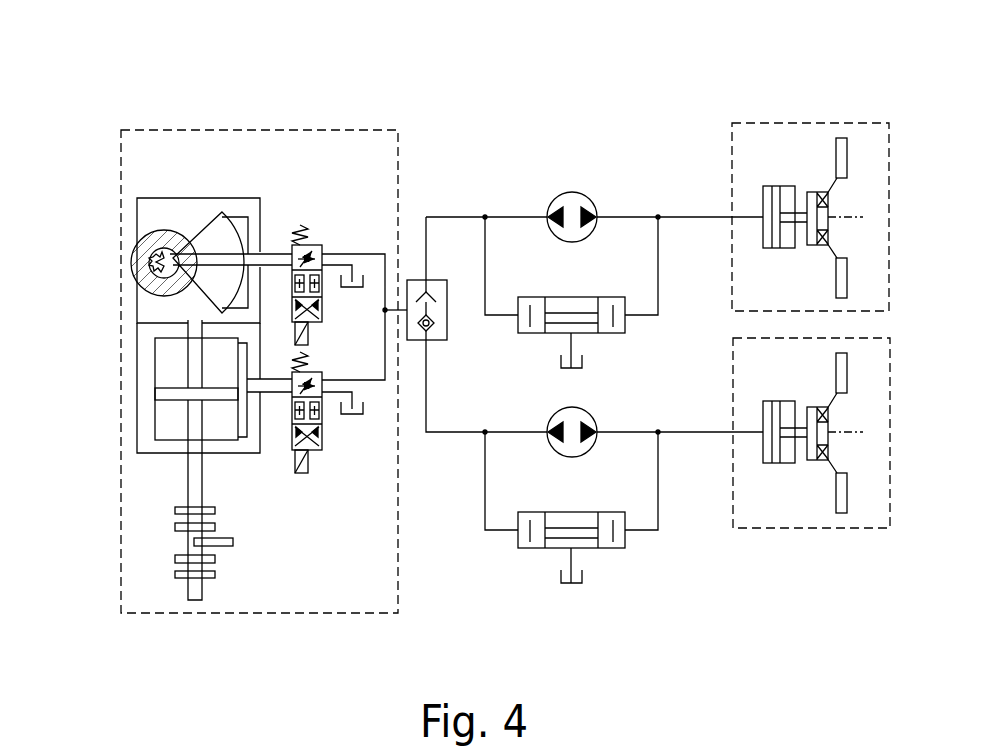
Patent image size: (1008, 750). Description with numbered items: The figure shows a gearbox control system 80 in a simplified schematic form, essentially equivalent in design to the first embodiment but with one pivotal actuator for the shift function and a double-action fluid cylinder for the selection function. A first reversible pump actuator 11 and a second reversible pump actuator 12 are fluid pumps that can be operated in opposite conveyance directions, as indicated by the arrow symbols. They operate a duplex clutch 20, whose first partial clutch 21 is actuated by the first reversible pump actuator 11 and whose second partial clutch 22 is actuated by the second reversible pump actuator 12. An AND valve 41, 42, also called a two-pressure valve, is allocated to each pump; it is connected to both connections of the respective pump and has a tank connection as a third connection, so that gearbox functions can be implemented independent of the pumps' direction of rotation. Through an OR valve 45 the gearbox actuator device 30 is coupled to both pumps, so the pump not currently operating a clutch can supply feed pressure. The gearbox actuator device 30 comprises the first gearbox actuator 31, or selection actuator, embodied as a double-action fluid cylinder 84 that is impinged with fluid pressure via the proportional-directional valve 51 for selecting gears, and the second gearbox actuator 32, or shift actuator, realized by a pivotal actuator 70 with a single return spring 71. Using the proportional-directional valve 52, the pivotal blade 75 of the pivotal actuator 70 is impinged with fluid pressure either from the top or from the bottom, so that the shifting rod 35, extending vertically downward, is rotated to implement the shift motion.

The gearbox control system 80 is at (659, 66).
The gearbox actuator device 30 is at (322, 126).
The second gearbox actuator 32 is at (243, 193).
The pivotal actuator 70 is at (170, 230).
The return spring 71 is at (132, 263).
The pivotal blade 75 is at (213, 252).
The proportional-directional valve 52 is at (322, 241).
The proportional-directional valve 51 is at (326, 456).
The first gearbox actuator 31 is at (242, 460).
The double-action fluid cylinder 84 is at (165, 443).
The shifting rod 35 is at (197, 601).
The OR valve 45 is at (440, 340).
The first reversible pump actuator 11 is at (571, 192).
The second reversible pump actuator 12 is at (591, 416).
The AND valve 41 is at (625, 325).
The AND valve 42 is at (625, 542).
The duplex clutch 20 is at (812, 118).
The first partial clutch 21 is at (857, 122).
The second partial clutch 22 is at (815, 529).